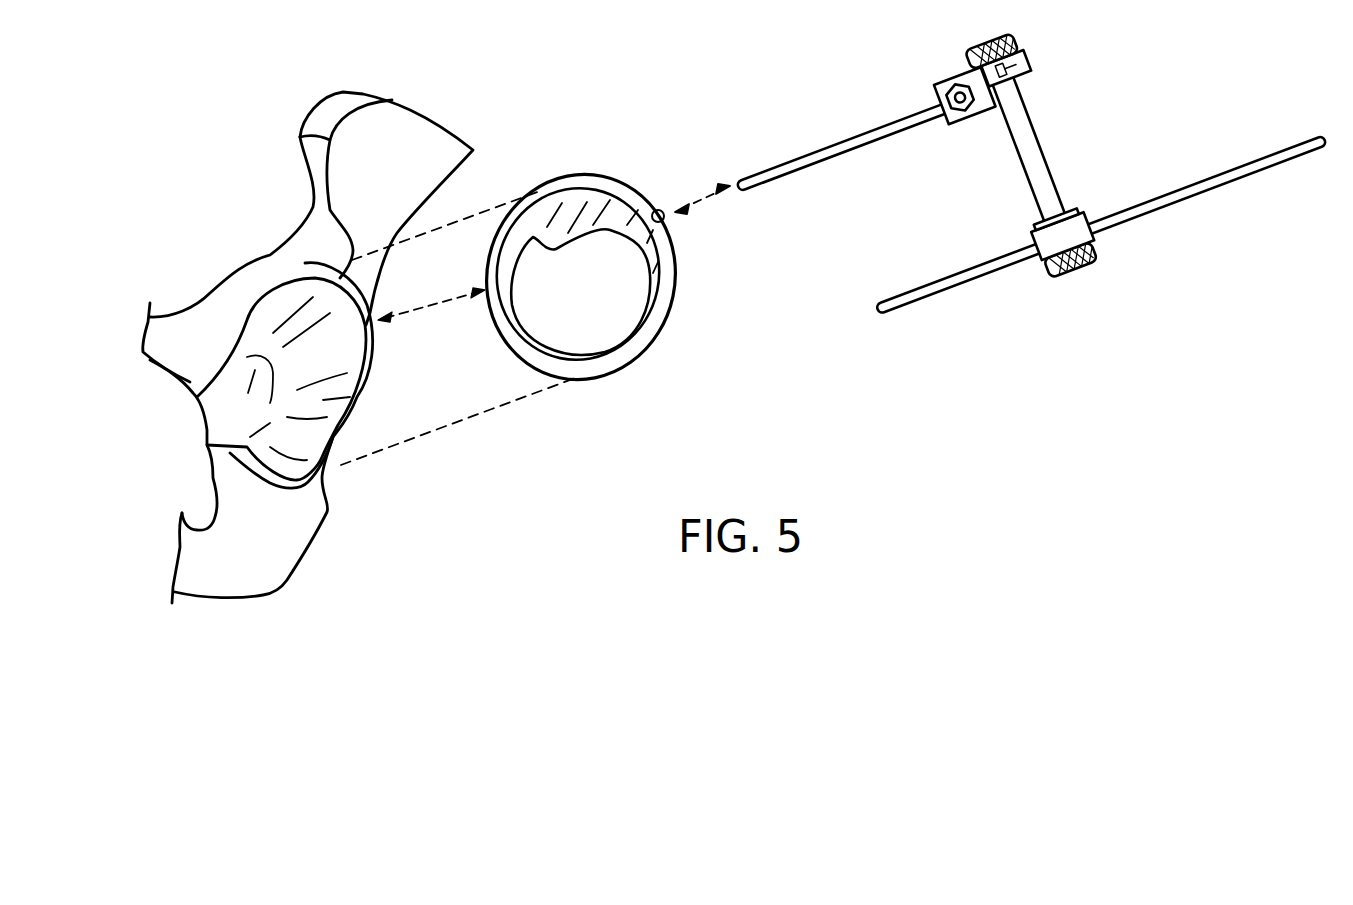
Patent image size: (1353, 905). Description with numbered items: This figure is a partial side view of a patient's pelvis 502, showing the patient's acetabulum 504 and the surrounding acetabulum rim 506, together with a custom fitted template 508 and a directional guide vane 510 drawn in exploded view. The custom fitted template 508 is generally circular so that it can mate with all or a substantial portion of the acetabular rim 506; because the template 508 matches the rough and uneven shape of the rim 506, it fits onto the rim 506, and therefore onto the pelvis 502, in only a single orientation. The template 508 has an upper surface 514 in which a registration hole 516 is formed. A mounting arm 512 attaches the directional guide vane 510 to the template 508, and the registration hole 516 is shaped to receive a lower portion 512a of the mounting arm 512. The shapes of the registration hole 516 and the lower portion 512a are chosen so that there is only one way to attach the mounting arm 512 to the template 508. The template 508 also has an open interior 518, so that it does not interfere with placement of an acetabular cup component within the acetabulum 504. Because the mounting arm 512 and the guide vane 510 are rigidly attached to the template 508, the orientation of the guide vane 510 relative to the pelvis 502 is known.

The pelvis 502 is at (426, 107).
The acetabulum 504 is at (348, 400).
The acetabulum rim 506 is at (355, 297).
The custom fitted template 508 is at (610, 264).
The directional guide vane 510 is at (1226, 188).
The mounting arm 512 is at (1033, 63).
The lower portion of the mounting arm 512a is at (770, 182).
The upper surface 514 is at (596, 172).
The registration hole 516 is at (659, 209).
The open interior 518 is at (597, 336).